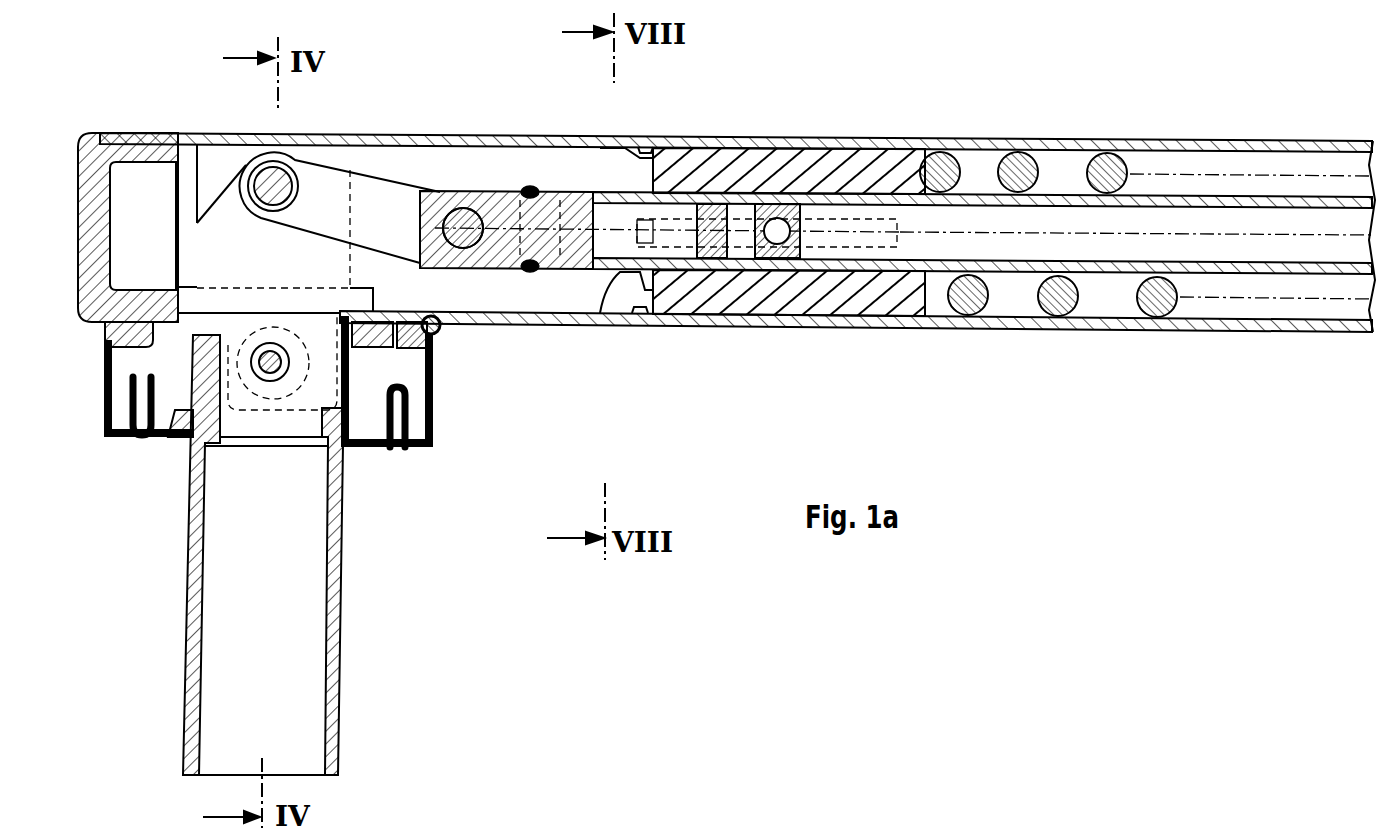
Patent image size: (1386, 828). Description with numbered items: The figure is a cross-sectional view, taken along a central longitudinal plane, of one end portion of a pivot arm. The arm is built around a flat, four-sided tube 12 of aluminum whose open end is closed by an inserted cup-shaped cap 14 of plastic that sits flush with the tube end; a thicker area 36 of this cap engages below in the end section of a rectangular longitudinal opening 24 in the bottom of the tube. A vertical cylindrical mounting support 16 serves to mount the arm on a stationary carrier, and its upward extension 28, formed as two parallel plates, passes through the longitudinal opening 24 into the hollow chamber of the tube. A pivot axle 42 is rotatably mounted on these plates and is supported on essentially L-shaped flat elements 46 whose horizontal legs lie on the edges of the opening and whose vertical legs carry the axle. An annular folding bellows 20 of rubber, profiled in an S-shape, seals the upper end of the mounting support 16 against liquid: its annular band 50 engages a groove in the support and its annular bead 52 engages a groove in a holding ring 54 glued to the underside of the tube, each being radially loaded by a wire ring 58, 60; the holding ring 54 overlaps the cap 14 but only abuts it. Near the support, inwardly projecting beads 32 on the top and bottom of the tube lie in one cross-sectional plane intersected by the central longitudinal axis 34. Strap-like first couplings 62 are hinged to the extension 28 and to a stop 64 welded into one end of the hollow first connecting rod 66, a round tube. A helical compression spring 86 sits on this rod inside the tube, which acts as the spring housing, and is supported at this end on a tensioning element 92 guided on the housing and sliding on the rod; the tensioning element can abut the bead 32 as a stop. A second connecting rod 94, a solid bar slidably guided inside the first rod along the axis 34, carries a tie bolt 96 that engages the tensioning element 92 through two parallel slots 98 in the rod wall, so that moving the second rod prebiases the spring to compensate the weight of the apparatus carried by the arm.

The four-sided tube 12 is at (1003, 333).
The cap 14 is at (95, 124).
The mounting support 16 is at (352, 565).
The folding bellows 20 is at (110, 447).
The longitudinal opening 24 is at (387, 313).
The extension 28 is at (220, 212).
The bead 32 is at (647, 135).
The central longitudinal axis 34 is at (1267, 237).
The thicker area 36 is at (104, 348).
The pivot axle 42 is at (270, 370).
The L-shaped flat element 46 is at (345, 298).
The annular band 50 is at (328, 448).
The annular bead 52 is at (397, 355).
The holding ring 54 is at (203, 320).
The wire ring 58 is at (372, 450).
The wire ring 60 is at (440, 333).
The first coupling 62 is at (390, 185).
The stop 64 is at (508, 253).
The first connecting rod 66 is at (1303, 190).
The helical compression spring 86 is at (1030, 158).
The tensioning element 92 is at (820, 160).
The second connecting rod 94 is at (1215, 225).
The tie bolt 96 is at (766, 250).
The slot 98 is at (592, 325).